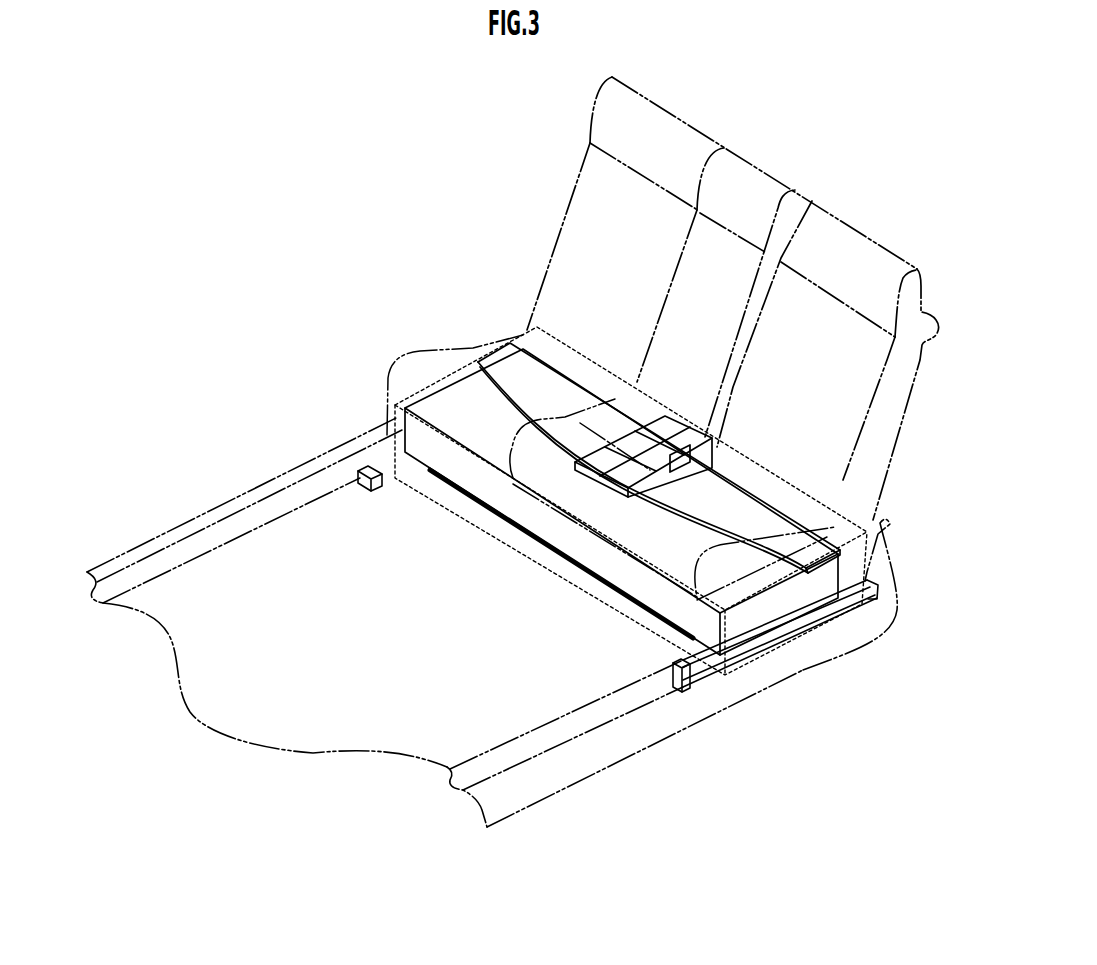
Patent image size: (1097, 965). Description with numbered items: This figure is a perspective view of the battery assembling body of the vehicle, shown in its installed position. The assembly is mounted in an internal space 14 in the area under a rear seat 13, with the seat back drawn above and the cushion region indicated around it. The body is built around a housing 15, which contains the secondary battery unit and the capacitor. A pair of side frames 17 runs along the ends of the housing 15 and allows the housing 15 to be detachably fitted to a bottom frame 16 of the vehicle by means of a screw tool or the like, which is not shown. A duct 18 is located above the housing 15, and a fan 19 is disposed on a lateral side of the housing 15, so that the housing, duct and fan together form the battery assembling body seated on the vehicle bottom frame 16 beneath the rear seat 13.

The rear seat 13 is at (812, 203).
The internal space 14 is at (459, 368).
The housing 15 is at (552, 523).
The bottom frame 16 is at (233, 503).
The side frames 17 is at (366, 492).
The duct 18 is at (510, 350).
The fan 19 is at (690, 425).